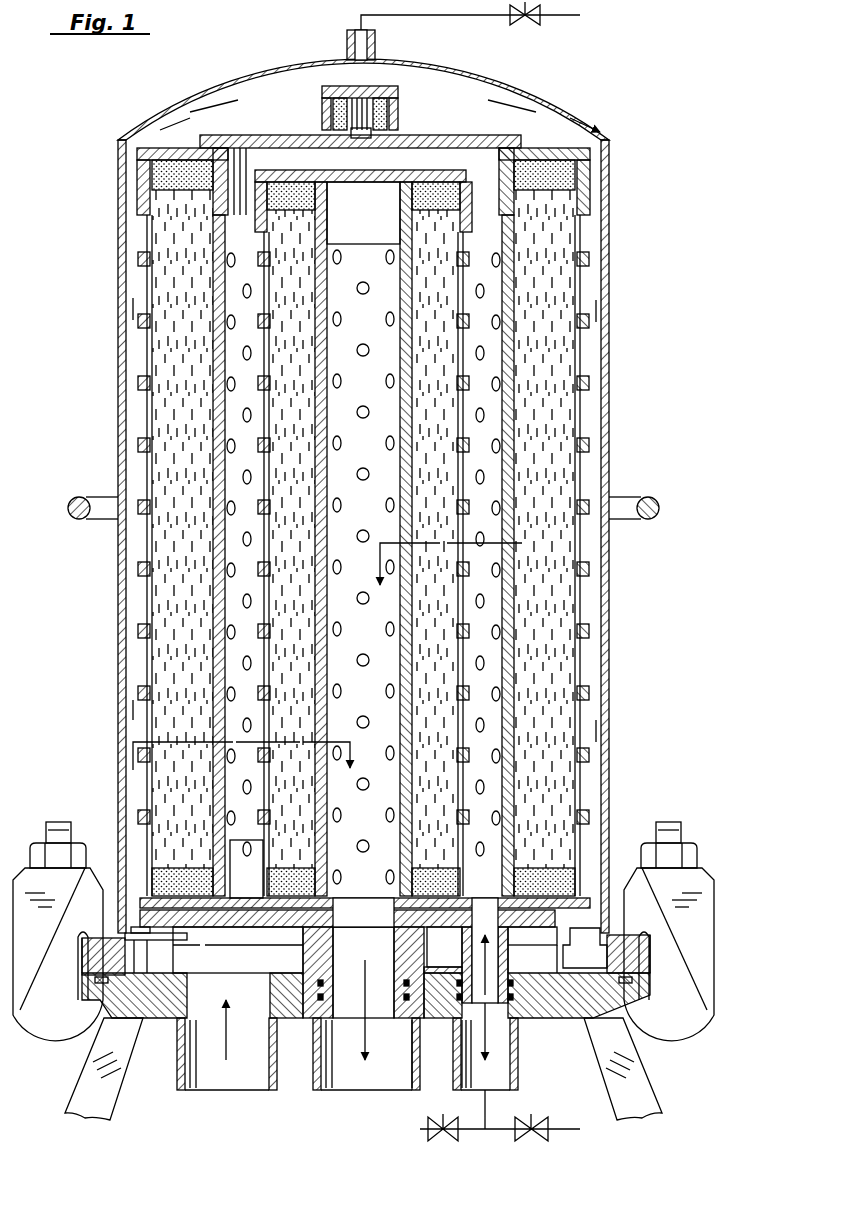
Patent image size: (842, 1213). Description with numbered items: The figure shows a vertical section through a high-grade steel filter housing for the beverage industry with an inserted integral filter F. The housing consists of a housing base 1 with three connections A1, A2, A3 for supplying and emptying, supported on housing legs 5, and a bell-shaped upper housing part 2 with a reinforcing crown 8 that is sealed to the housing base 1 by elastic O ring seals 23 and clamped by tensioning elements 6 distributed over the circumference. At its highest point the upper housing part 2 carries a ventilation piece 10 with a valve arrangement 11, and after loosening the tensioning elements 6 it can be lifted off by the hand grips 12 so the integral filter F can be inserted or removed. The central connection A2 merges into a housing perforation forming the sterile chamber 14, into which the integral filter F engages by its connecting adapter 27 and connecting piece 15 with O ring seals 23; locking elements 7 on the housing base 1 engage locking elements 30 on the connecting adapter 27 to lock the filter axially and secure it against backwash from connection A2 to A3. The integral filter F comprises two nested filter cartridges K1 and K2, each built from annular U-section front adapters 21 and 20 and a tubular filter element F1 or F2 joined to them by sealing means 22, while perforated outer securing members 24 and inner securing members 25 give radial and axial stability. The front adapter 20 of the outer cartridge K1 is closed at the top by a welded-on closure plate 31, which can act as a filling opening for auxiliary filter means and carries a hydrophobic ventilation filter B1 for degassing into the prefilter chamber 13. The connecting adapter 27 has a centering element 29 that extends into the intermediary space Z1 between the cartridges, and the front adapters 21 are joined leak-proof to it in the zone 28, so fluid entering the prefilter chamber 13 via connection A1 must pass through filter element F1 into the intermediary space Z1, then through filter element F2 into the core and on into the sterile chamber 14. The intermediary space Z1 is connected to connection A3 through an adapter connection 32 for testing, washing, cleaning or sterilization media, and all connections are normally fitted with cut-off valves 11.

The housing base 1 is at (560, 1018).
The upper housing part 2 is at (609, 598).
The housing legs 5 is at (112, 1108).
The tensioning elements 6 is at (42, 1040).
The locking elements 7 is at (130, 945).
The reinforcing crown 8 is at (80, 960).
The ventilation piece 10 is at (376, 42).
The valve arrangement 11 is at (531, 26).
The hand grips 12 is at (80, 520).
The prefilter chamber 13 is at (494, 116).
The sterile chamber 14 is at (397, 962).
The connecting piece 15 is at (405, 1020).
The front adapter 20 is at (178, 148).
The front adapter 21 is at (590, 898).
The sealing means 22 is at (182, 192).
The O ring seals 23 is at (342, 982).
The outer securing member 24 is at (145, 322).
The inner securing member 25 is at (213, 452).
The connecting adapter 27 is at (298, 960).
The connection zone 28 is at (345, 906).
The centering element 29 is at (247, 900).
The locking elements 30 is at (366, 995).
The closure plate 31 is at (266, 135).
The adapter connection 32 is at (487, 1045).
The connection A1 is at (220, 1085).
The connection A2 is at (370, 1085).
The connection A3 is at (518, 1078).
The hydrophobic ventilation filter B1 is at (321, 104).
The integral filter F is at (212, 130).
The filter element F1 is at (565, 240).
The filter element F2 is at (455, 680).
The filter cartridge K1 is at (592, 452).
The filter cartridge K2 is at (470, 632).
The intermediary space Z1 is at (240, 658).